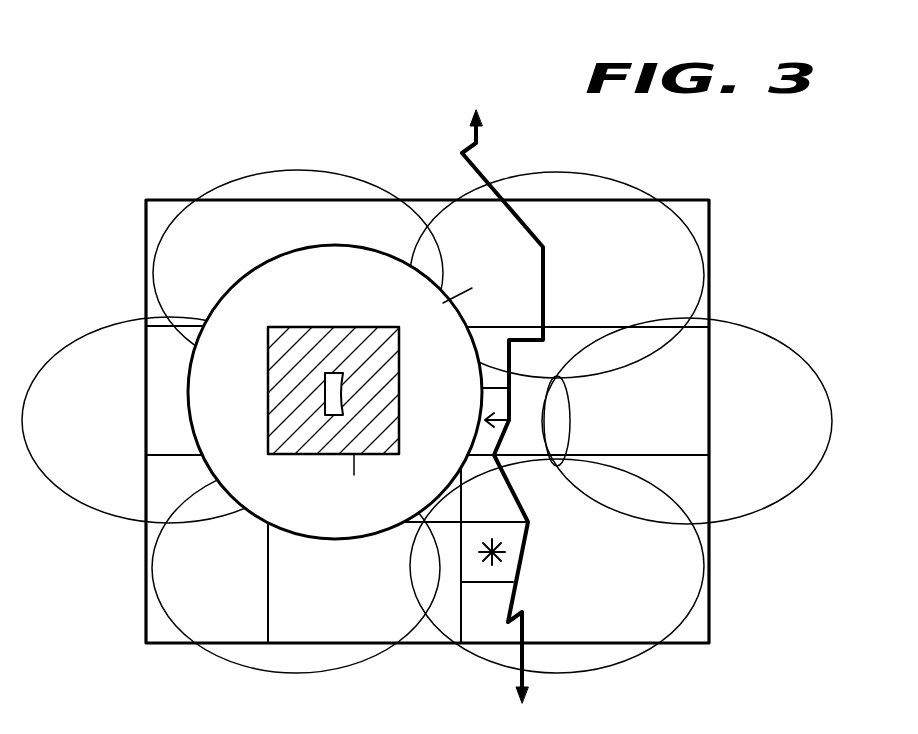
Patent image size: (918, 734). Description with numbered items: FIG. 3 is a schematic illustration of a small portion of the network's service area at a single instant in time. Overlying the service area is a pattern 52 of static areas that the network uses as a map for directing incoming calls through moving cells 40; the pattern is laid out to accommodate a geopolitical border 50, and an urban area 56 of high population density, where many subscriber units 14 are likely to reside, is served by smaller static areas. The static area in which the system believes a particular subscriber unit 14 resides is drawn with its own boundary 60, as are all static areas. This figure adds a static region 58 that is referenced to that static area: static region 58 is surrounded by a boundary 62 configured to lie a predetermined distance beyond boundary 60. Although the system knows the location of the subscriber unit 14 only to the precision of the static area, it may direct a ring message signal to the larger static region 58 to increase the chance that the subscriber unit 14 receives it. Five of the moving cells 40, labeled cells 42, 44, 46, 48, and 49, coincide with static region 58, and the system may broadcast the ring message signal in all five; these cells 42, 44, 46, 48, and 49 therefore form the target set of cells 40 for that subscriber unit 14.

The subscriber unit 14 is at (340, 373).
The moving cells 40 is at (345, 174).
The cell 42 is at (252, 173).
The cell 44 is at (69, 345).
The cell 46 is at (572, 422).
The cell 48 is at (619, 181).
The cell 49 is at (221, 658).
The geopolitical border 50 is at (478, 167).
The pattern of static areas 52 is at (147, 231).
The urban area 56 is at (505, 547).
The static region 58 is at (474, 286).
The boundary 60 is at (268, 380).
The boundary 62 is at (253, 264).